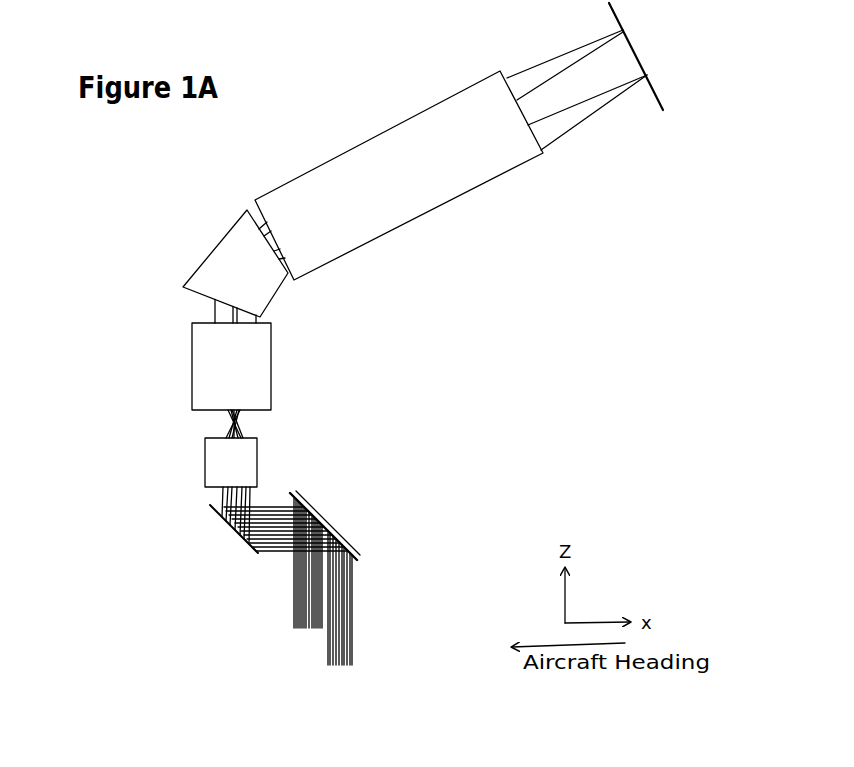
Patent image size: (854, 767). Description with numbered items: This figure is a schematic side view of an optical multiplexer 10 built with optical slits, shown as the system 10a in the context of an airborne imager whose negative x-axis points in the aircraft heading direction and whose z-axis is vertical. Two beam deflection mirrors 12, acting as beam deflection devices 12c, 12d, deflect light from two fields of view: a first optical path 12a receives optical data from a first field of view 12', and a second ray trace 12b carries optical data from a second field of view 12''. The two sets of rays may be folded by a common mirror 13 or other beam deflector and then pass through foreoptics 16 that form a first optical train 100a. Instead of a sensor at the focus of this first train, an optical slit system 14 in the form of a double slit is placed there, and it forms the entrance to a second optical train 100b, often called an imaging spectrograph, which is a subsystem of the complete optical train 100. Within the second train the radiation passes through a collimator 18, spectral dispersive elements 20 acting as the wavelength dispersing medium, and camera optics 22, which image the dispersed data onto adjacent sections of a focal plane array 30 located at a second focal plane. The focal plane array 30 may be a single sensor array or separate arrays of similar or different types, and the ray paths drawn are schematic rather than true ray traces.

The optical multiplexer 10 is at (718, 195).
The system 10a is at (140, 265).
The beam deflection mirrors 12 is at (383, 512).
The first optical path 12a is at (353, 610).
The ray trace 12b is at (290, 612).
The beam deflection system 12c is at (308, 503).
The beam deflection device 12d is at (320, 527).
The first field of view 12' is at (340, 688).
The second field of view 12'' is at (293, 688).
The common mirror 13 is at (219, 508).
The optical slit system 14 is at (243, 423).
The foreoptics 16 is at (231, 462).
The collimator 18 is at (231, 366).
The spectral dispersive elements 20 is at (235, 263).
The camera optics 22 is at (399, 175).
The focal plane array 30 is at (637, 53).
The optical train 100 is at (530, 490).
The first optical train 100a is at (158, 437).
The second optical train 100b is at (543, 160).